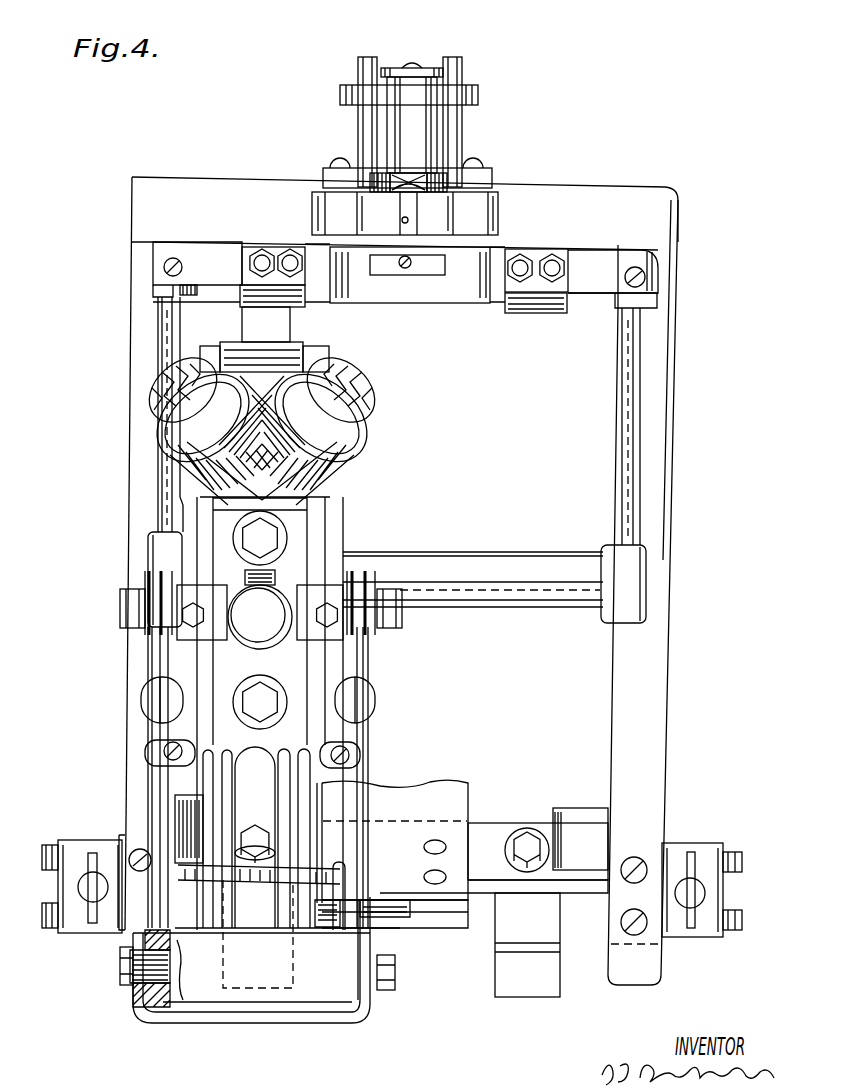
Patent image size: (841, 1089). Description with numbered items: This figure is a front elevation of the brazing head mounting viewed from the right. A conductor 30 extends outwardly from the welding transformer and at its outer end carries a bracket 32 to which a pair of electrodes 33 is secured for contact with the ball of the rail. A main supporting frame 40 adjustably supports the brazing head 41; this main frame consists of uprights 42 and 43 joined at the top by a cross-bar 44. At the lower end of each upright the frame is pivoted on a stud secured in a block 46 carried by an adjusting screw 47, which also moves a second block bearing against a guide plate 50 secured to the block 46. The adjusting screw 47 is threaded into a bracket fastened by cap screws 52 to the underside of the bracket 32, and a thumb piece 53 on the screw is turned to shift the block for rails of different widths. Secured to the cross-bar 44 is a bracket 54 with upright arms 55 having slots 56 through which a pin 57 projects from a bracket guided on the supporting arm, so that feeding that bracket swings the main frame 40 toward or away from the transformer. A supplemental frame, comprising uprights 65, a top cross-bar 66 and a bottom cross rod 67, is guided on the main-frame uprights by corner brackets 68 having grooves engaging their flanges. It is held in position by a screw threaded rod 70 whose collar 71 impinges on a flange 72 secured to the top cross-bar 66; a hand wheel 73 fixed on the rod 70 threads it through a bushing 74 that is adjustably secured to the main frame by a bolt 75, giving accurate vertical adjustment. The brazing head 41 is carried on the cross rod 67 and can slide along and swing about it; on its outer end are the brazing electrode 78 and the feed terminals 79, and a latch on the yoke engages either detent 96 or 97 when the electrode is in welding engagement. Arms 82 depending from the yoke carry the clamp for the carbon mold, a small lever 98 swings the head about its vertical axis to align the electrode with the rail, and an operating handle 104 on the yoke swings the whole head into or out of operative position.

The conductor 30 is at (432, 784).
The bracket 32 is at (505, 828).
The electrodes 33 is at (252, 990).
The main supporting frame 40 is at (142, 318).
The brazing head 41 is at (318, 660).
The upright 42 is at (142, 352).
The upright 43 is at (668, 410).
The cross-bar 44 is at (637, 190).
The block 46 is at (80, 932).
The adjusting screw 47 is at (78, 887).
The guide plate 50 is at (58, 842).
The cap screws 52 is at (527, 850).
The thumb piece 53 is at (92, 853).
The bracket 54 is at (492, 172).
The upright arms 55 is at (358, 120).
The slots 56 is at (462, 78).
The pin 57 is at (478, 97).
The uprights 65 is at (163, 448).
The top cross-bar 66 is at (626, 262).
The bottom cross rod 67 is at (548, 606).
The corner brackets 68 is at (150, 548).
The screw threaded rod 70 is at (412, 66).
The collar 71 is at (388, 272).
The flange 72 is at (456, 250).
The hand wheel 73 is at (498, 213).
The bushing 74 is at (387, 145).
The bolt 75 is at (425, 180).
The brazing electrode 78 is at (300, 683).
The feed terminals 79 is at (162, 402).
The arms 82 is at (150, 788).
The detent 96 is at (248, 298).
The detent 97 is at (532, 313).
The lever 98 is at (275, 578).
The operating handle 104 is at (261, 610).